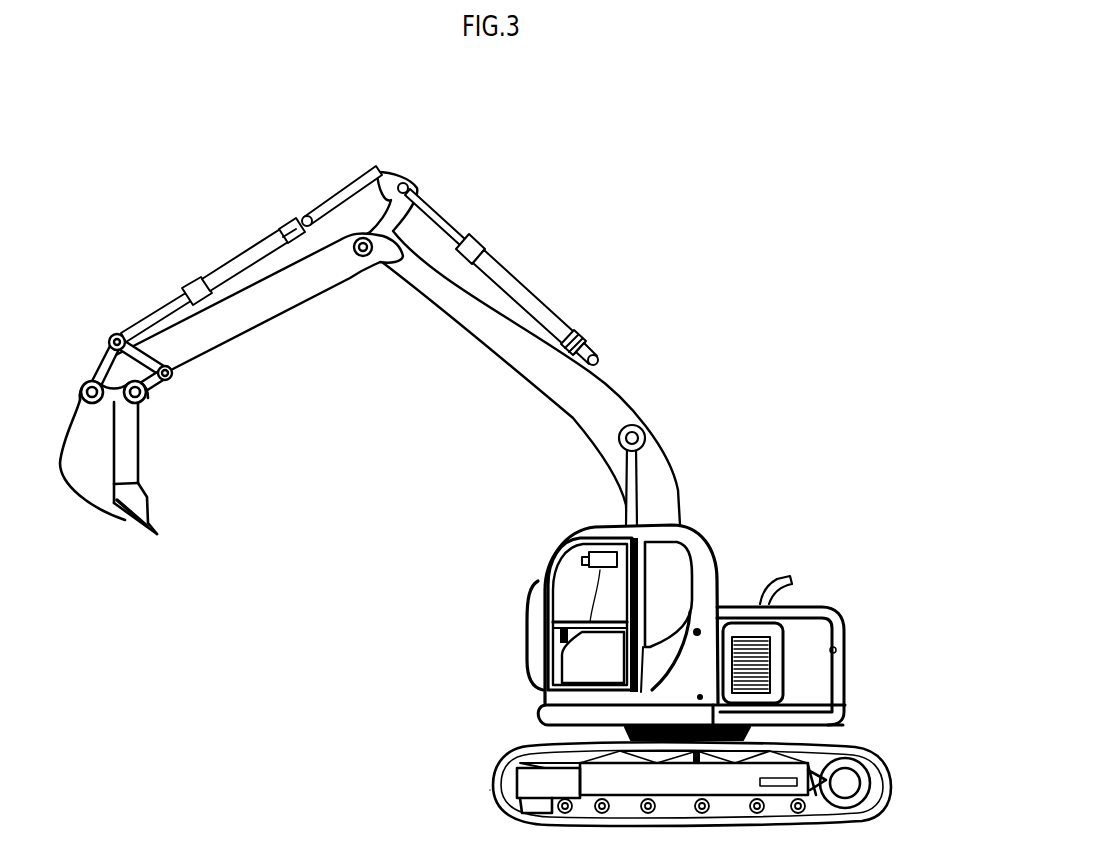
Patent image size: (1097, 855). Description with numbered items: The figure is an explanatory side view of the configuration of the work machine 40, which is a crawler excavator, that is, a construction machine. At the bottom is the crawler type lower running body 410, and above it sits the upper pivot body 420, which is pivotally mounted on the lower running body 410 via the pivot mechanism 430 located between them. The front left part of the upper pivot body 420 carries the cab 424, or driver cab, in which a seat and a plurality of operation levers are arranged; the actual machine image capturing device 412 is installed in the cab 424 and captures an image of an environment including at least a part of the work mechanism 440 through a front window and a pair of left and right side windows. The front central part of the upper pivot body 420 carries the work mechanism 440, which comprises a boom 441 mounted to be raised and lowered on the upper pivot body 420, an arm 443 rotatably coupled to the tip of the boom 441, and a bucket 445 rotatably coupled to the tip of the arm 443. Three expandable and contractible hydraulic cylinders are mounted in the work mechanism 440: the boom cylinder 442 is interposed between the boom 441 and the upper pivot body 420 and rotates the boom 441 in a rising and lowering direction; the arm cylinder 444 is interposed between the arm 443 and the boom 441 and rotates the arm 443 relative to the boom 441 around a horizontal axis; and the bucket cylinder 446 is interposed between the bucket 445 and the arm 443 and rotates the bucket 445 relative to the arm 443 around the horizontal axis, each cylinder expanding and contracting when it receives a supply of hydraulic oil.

The work machine 40 is at (715, 154).
The lower running body 410 is at (515, 751).
The actual machine image capturing device 412 is at (600, 552).
The upper pivot body 420 is at (865, 633).
The cab 424 is at (726, 513).
The pivot mechanism 430 is at (770, 733).
The work mechanism 440 is at (513, 206).
The boom 441 is at (665, 458).
The boom cylinder 442 is at (622, 503).
The arm 443 is at (260, 316).
The arm cylinder 444 is at (523, 296).
The bucket 445 is at (92, 488).
The bucket cylinder 446 is at (253, 247).